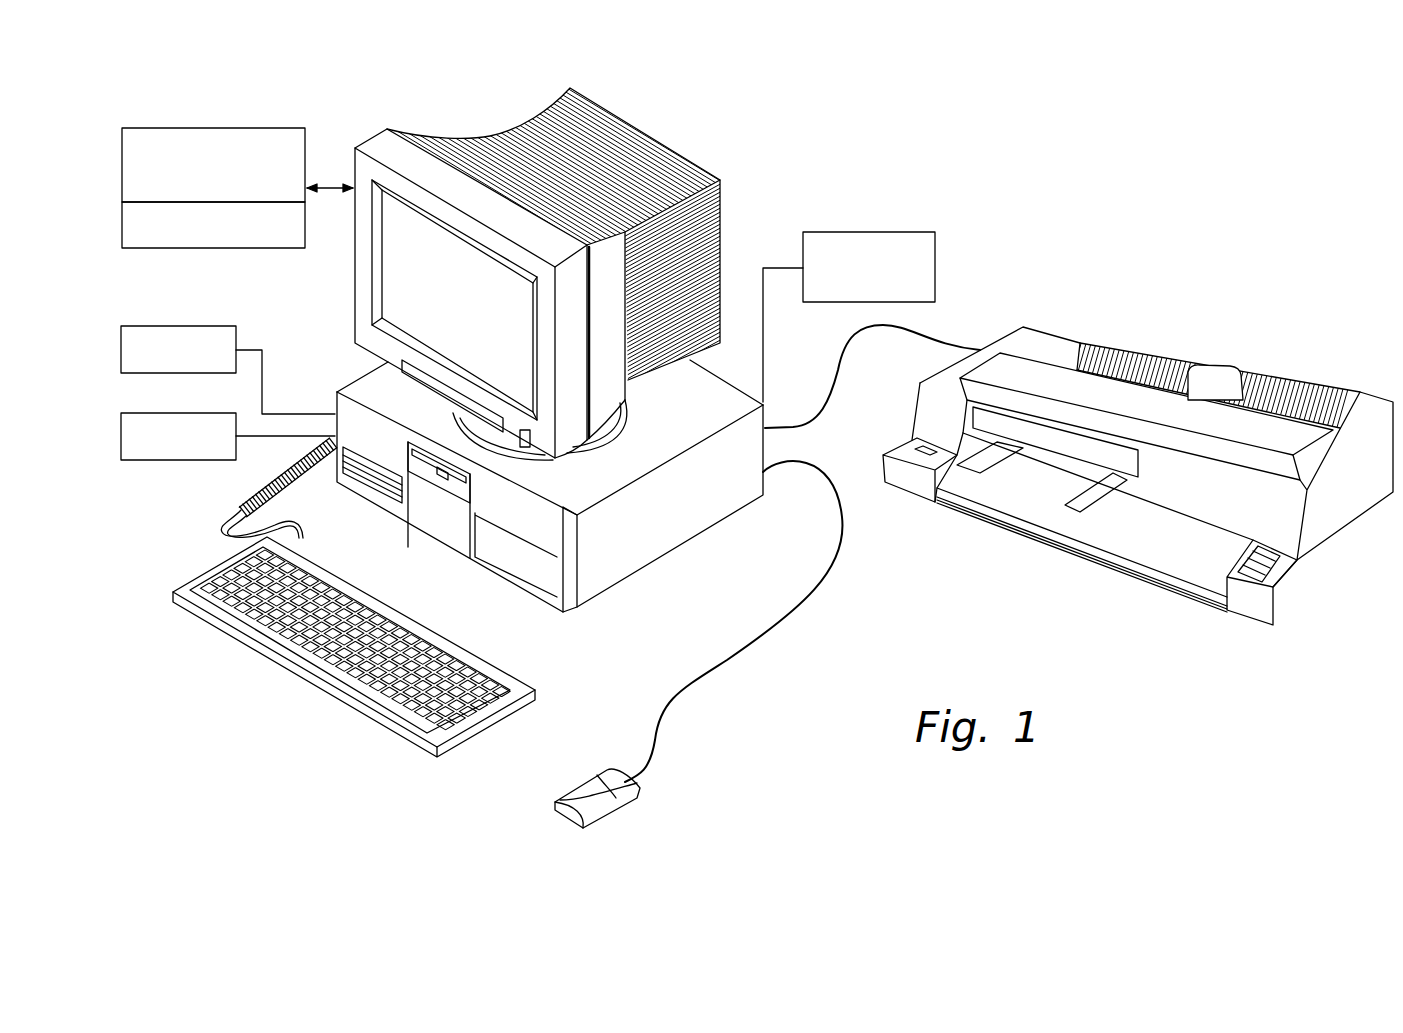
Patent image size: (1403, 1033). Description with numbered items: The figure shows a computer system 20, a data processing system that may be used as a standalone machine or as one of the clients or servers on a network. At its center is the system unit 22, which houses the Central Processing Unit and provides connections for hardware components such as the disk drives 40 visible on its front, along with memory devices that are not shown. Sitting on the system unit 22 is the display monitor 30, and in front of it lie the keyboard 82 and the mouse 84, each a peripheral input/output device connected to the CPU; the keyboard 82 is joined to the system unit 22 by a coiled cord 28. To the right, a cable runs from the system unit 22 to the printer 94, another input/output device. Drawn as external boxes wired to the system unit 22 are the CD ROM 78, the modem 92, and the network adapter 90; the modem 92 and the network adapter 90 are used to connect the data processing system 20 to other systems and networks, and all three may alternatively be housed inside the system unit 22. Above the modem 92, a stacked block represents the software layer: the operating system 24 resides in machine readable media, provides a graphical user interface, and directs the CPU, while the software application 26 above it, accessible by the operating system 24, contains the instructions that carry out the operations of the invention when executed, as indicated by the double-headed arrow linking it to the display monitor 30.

The computer system 20 is at (933, 127).
The system unit 22 is at (550, 502).
The operating system 24 is at (150, 248).
The software application 26 is at (150, 128).
The keyboard cable 28 is at (250, 488).
The display monitor 30 is at (473, 312).
The disk drives 40 is at (443, 467).
The CD ROM 78 is at (150, 460).
The keyboard 82 is at (322, 691).
The mouse 84 is at (630, 803).
The network adapter 90 is at (935, 245).
The modem 92 is at (150, 373).
The printer 94 is at (1091, 316).